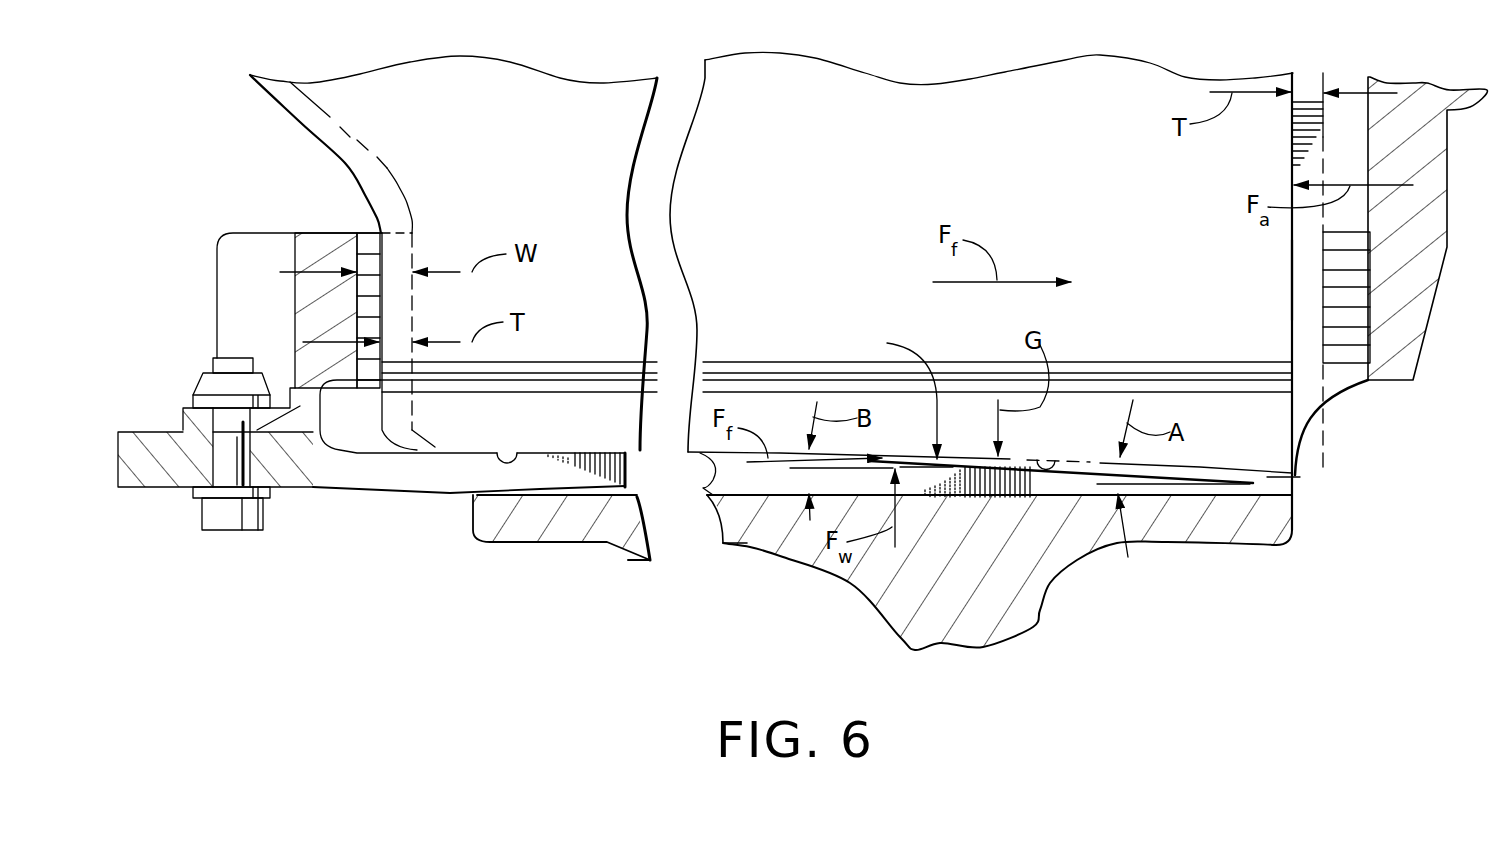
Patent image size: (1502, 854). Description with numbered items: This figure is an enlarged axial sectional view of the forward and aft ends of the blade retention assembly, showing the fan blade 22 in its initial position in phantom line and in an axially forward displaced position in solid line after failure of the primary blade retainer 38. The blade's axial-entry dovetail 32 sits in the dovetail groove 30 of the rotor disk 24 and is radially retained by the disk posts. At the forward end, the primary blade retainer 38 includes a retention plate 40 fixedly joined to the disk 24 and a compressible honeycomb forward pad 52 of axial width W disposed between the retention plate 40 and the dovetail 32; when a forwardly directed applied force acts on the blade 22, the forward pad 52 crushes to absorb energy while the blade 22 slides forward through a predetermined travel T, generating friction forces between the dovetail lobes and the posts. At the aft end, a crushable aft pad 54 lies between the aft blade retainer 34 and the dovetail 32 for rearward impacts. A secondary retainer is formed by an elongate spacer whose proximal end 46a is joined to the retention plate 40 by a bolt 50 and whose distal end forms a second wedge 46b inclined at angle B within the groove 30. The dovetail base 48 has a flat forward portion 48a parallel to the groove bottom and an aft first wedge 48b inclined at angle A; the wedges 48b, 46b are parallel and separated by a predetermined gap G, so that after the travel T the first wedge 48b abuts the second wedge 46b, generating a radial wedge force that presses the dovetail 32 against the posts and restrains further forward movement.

The fan blade 22 is at (720, 73).
The rotor disk 24 is at (745, 545).
The dovetail groove 30 is at (1292, 473).
The axial-entry dovetail 32 is at (1292, 303).
The aft blade retainer 34 is at (1415, 380).
The primary blade retainer 38 is at (273, 215).
The retention plate 40 is at (320, 233).
The proximal end 46a is at (160, 490).
The second wedge 46b is at (888, 393).
The dovetail base 48 is at (710, 455).
The forward portion 48a is at (520, 452).
The first wedge 48b is at (1072, 470).
The bolt 50 is at (207, 380).
The forward pad 52 is at (371, 247).
The aft pad 54 is at (1355, 366).